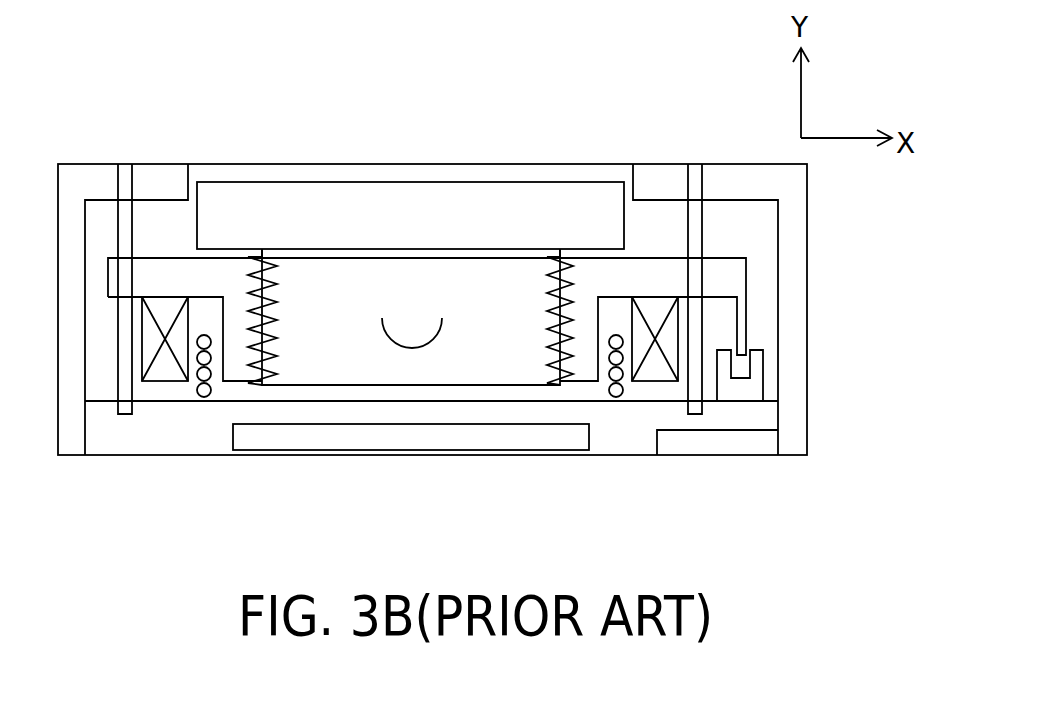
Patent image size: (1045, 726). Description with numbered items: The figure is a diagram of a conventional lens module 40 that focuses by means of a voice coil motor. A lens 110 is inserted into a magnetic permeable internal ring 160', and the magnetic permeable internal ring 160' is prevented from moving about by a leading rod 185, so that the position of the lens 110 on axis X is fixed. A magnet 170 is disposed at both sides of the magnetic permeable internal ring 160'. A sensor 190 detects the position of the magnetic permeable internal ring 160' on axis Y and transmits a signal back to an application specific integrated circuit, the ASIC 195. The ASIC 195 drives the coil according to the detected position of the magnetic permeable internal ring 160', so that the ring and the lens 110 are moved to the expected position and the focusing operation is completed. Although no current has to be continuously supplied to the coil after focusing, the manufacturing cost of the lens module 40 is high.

The lens module 40 is at (620, 528).
The lens 110 is at (480, 200).
The magnetic permeable internal ring 160' is at (490, 319).
The magnet 170 is at (163, 372).
The leading rod 185 is at (697, 218).
The sensor 190 is at (753, 390).
The application specific integrated circuit (ASIC) 195 is at (763, 443).